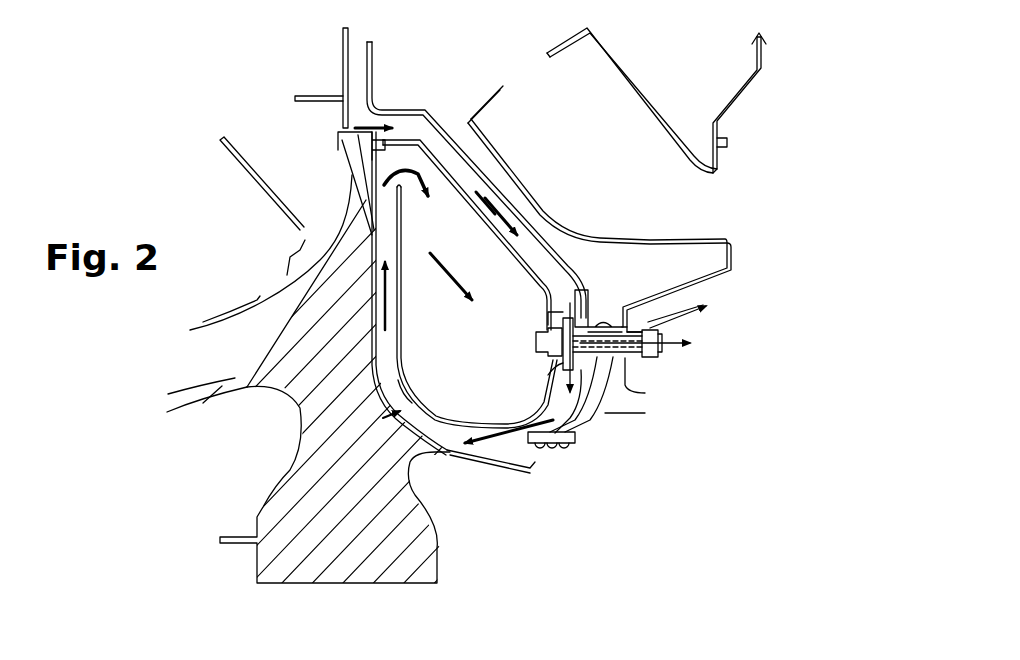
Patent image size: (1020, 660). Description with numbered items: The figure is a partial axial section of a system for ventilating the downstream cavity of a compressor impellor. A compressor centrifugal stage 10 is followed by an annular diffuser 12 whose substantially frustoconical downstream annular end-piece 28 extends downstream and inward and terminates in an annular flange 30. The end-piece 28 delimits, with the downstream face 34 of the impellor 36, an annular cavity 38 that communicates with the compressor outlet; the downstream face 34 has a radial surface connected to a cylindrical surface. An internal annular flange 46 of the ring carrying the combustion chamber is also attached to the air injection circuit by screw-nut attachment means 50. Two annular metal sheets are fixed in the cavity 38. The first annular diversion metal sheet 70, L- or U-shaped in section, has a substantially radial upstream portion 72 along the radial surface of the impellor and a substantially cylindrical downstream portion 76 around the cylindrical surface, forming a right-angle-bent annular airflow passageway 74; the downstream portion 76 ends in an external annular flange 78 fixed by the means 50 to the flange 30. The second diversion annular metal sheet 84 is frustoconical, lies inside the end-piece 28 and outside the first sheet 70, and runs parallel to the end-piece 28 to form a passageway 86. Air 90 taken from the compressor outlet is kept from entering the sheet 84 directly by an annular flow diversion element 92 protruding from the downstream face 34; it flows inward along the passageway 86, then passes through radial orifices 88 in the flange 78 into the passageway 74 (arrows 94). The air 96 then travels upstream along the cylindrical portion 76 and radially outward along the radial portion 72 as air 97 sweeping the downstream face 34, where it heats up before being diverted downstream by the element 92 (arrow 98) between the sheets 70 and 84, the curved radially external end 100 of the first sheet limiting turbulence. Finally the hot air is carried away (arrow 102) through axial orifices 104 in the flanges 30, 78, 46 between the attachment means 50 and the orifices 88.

The compressor centrifugal stage 10 is at (268, 280).
The annular diffuser 12 is at (338, 68).
The downstream annular end-piece 28 is at (437, 121).
The annular flange 30 is at (577, 318).
The downstream face 34 is at (402, 383).
The impellor 36 is at (298, 424).
The annular cavity 38 is at (468, 346).
The internal annular flange 46 is at (640, 354).
The attachment means 50 is at (540, 338).
The first annular diversion metal sheet 70 is at (380, 432).
The upstream portion 72 is at (402, 335).
The annular airflow passageway 74 is at (281, 206).
The downstream portion 76 is at (467, 422).
The external annular flange 78 is at (545, 371).
The second diversion annular metal sheet 84 is at (493, 210).
The passageway 86 is at (548, 240).
The radial orifices 88 is at (575, 443).
The air 90 is at (392, 124).
The annular flow diversion element 92 is at (372, 156).
The arrows 94 is at (548, 316).
The air 96 is at (507, 460).
The air 97 is at (390, 295).
The arrow 98 is at (378, 186).
The radially external end 100 is at (410, 194).
The arrow 102 is at (667, 335).
The axial orifices 104 is at (610, 358).